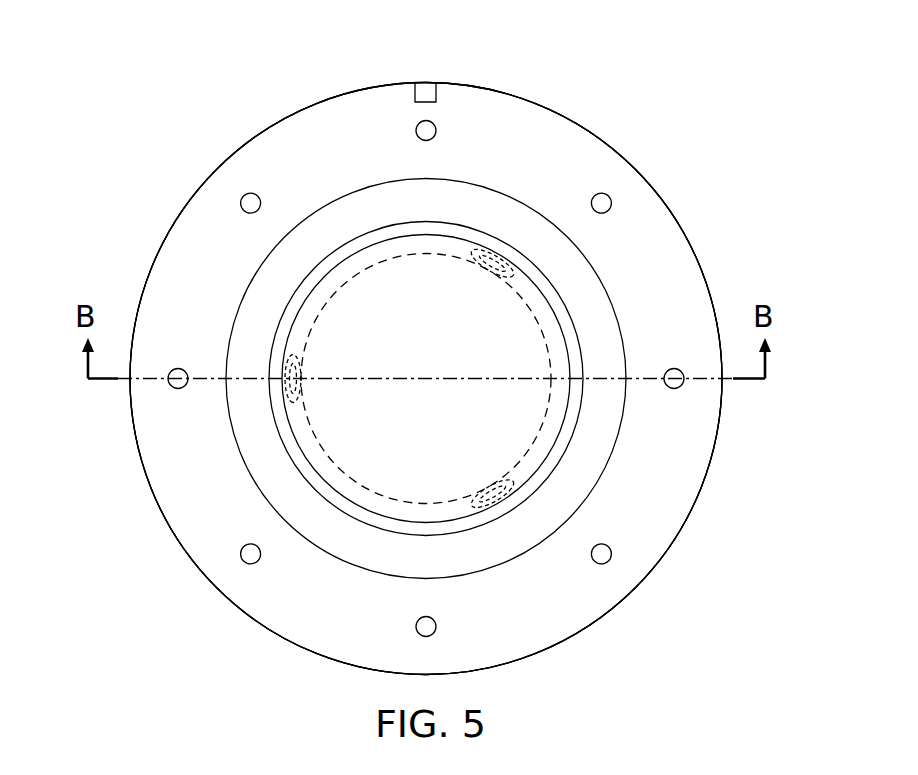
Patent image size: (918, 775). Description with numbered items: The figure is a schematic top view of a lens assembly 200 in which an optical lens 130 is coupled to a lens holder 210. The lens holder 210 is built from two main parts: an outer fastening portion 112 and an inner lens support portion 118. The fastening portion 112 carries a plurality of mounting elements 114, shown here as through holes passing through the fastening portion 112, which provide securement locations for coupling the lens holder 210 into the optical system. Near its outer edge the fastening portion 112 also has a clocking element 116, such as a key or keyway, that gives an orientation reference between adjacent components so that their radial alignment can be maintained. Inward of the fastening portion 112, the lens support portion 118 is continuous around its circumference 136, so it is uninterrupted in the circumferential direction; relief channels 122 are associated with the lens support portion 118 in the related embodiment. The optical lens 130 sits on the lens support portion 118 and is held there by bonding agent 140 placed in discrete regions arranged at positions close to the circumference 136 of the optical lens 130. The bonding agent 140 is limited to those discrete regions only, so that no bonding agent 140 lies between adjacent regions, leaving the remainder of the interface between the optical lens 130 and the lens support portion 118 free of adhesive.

The lens assembly 200 is at (692, 126).
The lens holder 210 is at (258, 123).
The fastening portion 112 is at (649, 551).
The mounting elements 114 is at (249, 193).
The clocking element 116 is at (427, 93).
The lens support portion 118 is at (590, 470).
The relief channels 122 is at (251, 309).
The optical lens 130 is at (567, 415).
The circumference 136 is at (377, 503).
The bonding agent 140 is at (490, 258).